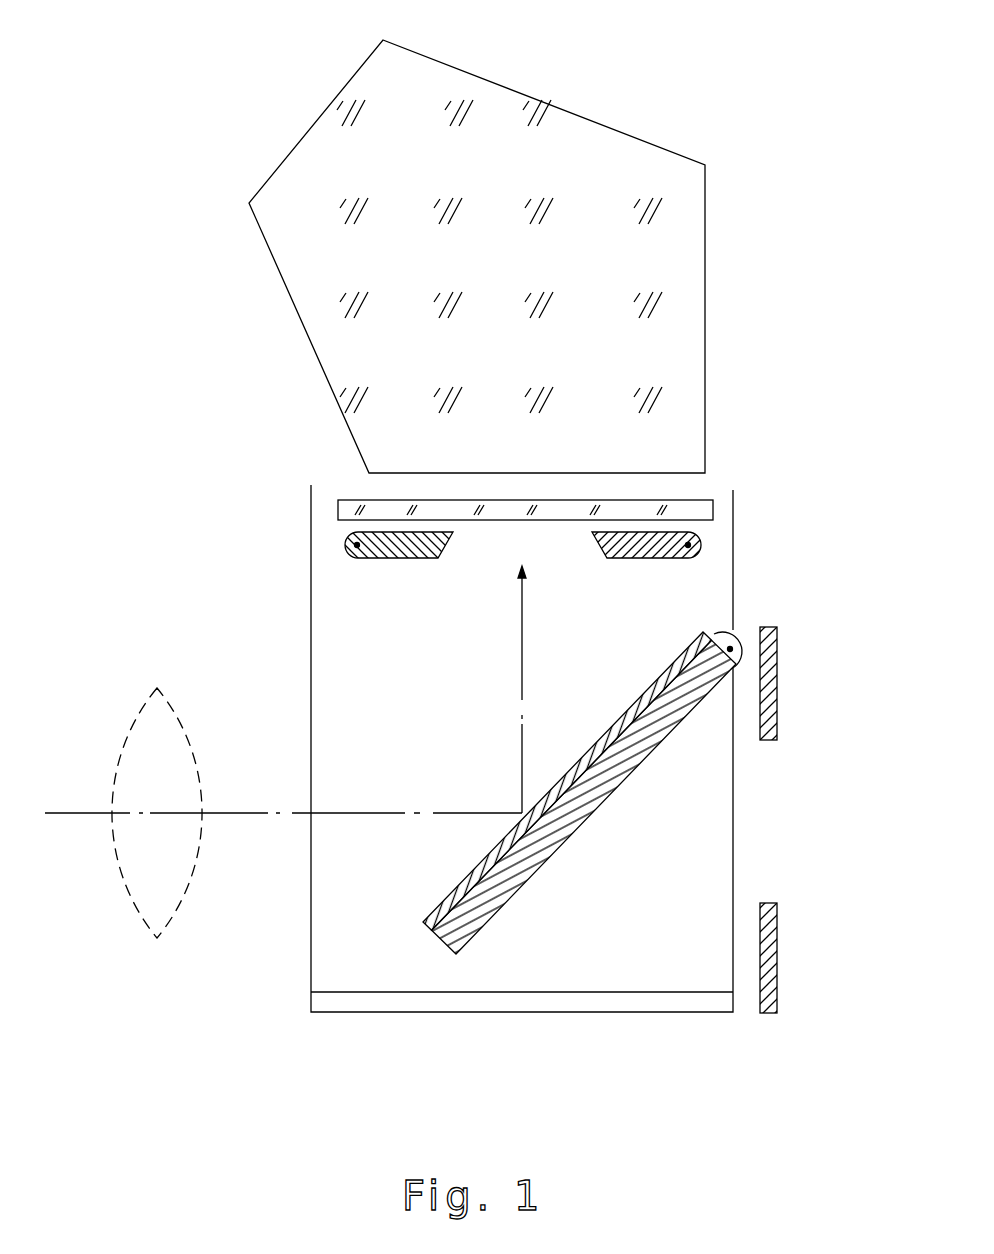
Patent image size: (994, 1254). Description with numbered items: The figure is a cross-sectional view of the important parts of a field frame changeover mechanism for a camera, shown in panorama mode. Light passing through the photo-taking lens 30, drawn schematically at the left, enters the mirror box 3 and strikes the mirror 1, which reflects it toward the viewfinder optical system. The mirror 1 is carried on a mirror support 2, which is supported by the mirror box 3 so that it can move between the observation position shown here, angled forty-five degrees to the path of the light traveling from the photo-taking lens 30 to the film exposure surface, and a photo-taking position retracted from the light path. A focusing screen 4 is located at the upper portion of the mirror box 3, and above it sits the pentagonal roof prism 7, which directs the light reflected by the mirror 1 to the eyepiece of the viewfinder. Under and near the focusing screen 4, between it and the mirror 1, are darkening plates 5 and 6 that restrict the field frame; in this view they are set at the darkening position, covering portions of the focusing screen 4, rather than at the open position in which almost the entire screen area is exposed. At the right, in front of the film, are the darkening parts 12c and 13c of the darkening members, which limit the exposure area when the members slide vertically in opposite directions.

The mirror 1 is at (457, 886).
The mirror support 2 is at (582, 823).
The mirror box 3 is at (632, 1013).
The focusing screen 4 is at (697, 500).
The darkening plate 5 is at (397, 558).
The darkening plate 6 is at (640, 558).
The pentagonal roof prism 7 is at (633, 139).
The darkening part 12c is at (778, 948).
The darkening part 13c is at (778, 665).
The photo-taking lens 30 is at (120, 757).